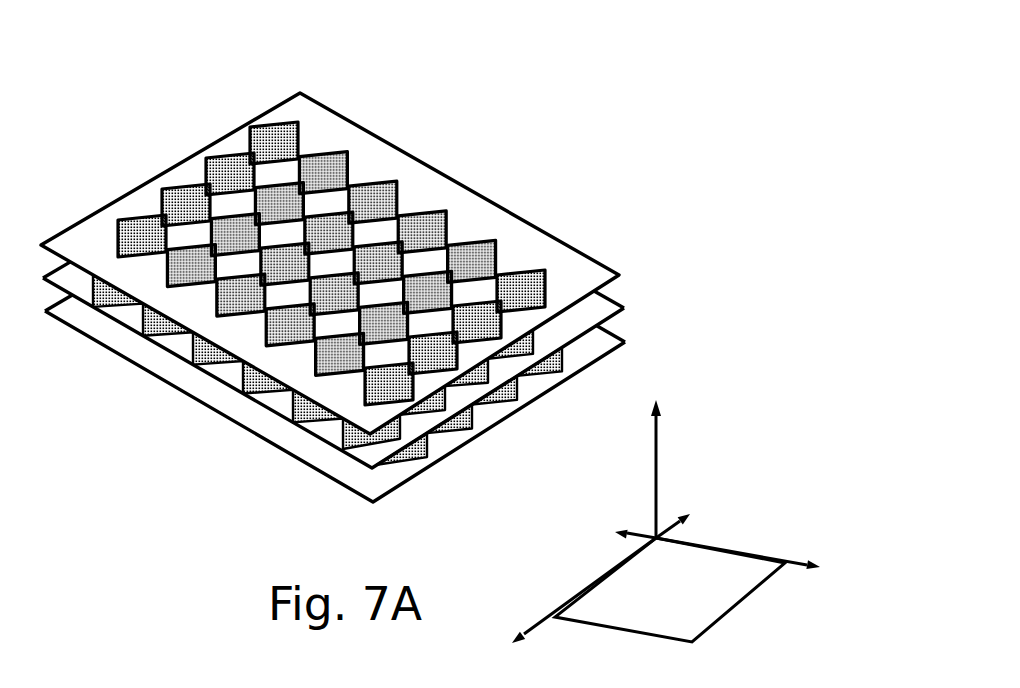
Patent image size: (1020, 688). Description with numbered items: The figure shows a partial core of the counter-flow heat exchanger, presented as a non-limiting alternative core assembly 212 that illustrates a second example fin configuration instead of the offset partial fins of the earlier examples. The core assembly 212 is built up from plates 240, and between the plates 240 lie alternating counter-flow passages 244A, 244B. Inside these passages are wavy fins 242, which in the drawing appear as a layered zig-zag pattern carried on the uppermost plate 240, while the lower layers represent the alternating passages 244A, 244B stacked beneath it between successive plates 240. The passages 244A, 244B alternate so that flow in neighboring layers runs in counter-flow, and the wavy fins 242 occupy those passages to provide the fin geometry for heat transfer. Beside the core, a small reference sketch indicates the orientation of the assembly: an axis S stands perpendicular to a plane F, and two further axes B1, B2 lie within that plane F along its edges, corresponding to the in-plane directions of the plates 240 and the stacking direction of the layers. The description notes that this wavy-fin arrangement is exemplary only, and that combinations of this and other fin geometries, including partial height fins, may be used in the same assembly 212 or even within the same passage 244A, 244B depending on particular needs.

The alternative core assembly 212 is at (556, 101).
The plates 240 is at (573, 249).
The wavy fins 242 is at (422, 222).
The counter-flow passage 244A is at (603, 340).
The counter-flow passage 244B is at (600, 304).
The stacking axis S is at (657, 460).
The first in-plane axis B1 is at (726, 546).
The second in-plane axis B2 is at (607, 573).
The plane F is at (684, 598).